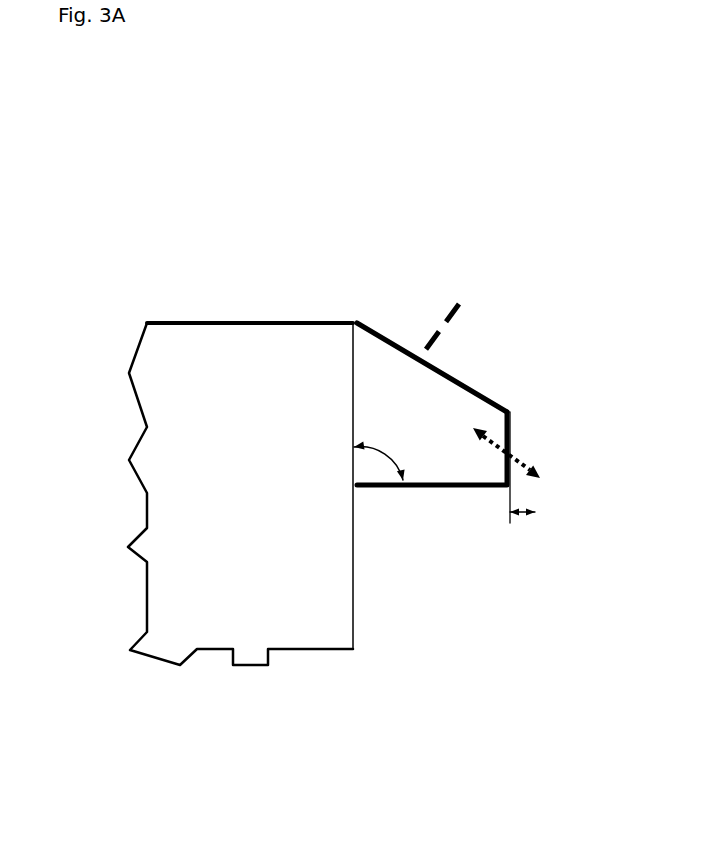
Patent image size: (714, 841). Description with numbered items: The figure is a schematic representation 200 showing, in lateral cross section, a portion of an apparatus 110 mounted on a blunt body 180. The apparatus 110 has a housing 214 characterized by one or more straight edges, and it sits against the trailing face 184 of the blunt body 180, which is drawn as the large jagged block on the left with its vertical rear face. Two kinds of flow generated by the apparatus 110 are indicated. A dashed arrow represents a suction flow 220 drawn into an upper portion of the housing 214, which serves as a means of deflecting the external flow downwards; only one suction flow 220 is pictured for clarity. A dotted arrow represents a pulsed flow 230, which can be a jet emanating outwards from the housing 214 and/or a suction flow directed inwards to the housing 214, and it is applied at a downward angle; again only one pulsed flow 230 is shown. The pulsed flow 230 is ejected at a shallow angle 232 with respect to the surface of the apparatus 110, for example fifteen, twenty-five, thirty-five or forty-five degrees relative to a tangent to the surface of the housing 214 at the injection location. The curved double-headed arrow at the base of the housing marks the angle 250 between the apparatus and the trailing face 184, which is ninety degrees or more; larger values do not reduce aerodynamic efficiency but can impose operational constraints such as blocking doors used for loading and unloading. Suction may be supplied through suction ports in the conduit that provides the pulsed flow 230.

The schematic representation 200 is at (118, 173).
The blunt body 180 is at (233, 478).
The trailing face 184 is at (353, 548).
The apparatus 110 is at (422, 443).
The housing 214 is at (402, 368).
The suction flow 220 is at (447, 310).
The pulsed flow 230 is at (522, 472).
The shallow angle 232 is at (510, 458).
The angle 250 is at (368, 447).